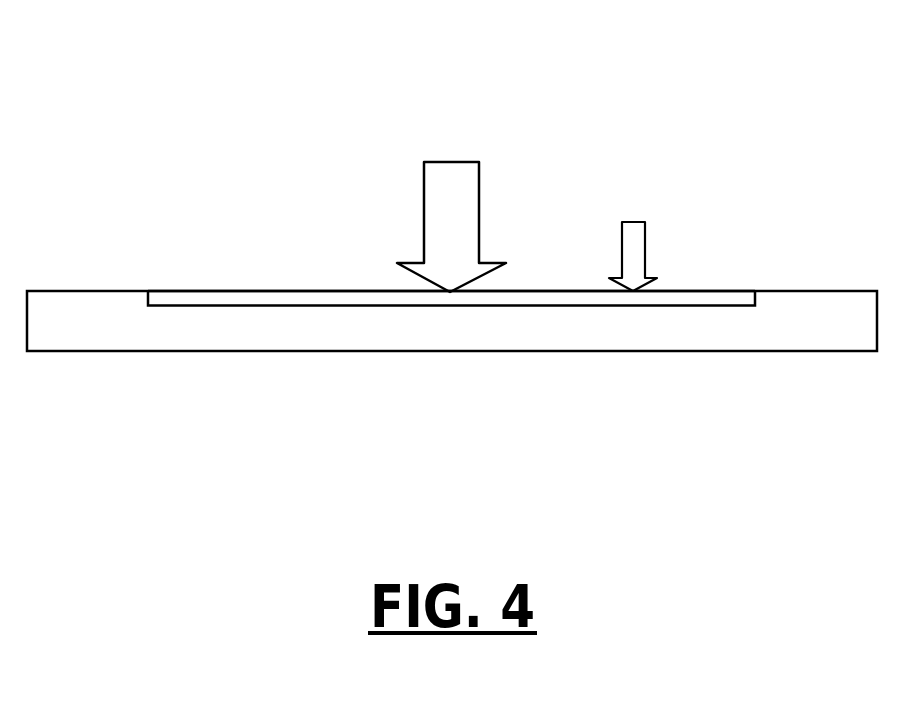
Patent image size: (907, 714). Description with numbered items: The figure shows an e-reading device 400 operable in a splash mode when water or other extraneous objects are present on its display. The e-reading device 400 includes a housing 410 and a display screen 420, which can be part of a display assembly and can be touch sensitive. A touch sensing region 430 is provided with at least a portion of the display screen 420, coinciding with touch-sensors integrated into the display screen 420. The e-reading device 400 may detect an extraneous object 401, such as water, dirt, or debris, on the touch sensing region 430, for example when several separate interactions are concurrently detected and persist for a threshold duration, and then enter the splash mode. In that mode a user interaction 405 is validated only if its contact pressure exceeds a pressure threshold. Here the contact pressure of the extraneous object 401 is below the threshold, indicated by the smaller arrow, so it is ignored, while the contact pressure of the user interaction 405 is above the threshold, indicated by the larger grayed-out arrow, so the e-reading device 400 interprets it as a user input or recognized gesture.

The e-reading device 400 is at (808, 70).
The housing 410 is at (452, 352).
The display screen 420 is at (737, 297).
The touch sensing region 430 is at (195, 290).
The user interaction 405 is at (451, 213).
The extraneous object 401 is at (633, 243).